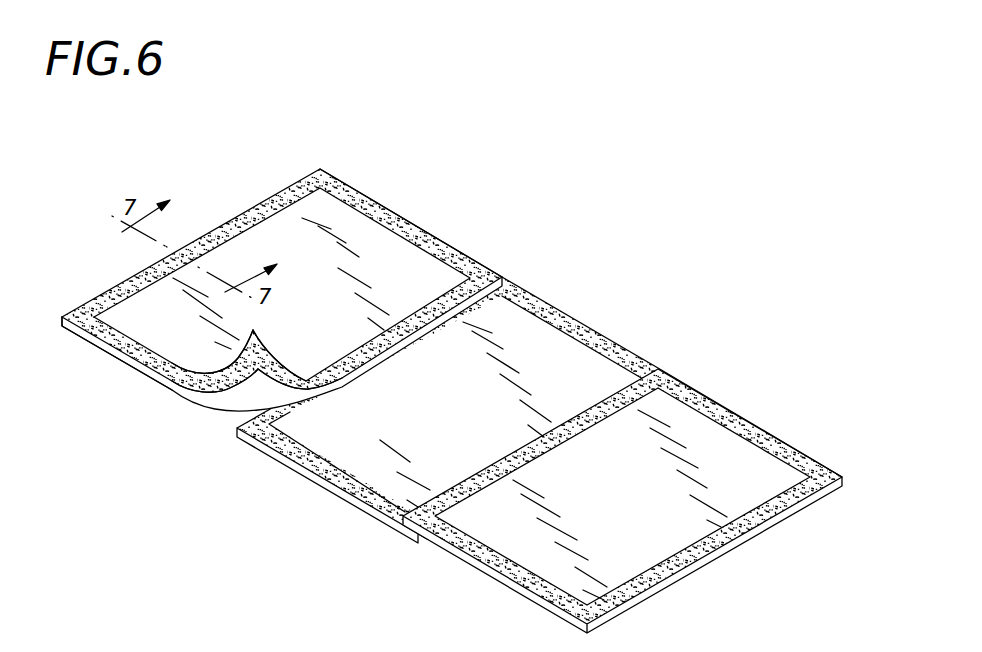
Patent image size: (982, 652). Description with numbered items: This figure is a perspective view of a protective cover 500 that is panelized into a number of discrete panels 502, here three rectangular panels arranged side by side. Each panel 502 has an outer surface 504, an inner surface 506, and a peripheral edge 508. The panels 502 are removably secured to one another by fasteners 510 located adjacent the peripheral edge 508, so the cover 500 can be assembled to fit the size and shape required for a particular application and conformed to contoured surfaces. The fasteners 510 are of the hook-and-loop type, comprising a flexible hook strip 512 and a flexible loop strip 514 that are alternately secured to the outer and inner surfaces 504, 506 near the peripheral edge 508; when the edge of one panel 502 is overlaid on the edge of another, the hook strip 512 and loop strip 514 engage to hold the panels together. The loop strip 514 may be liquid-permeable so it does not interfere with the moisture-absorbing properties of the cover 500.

The cover 500 is at (558, 240).
The panel 502 is at (332, 290).
The outer surface 504 is at (132, 317).
The inner surface 506 is at (248, 388).
The peripheral edge 508 is at (92, 339).
The fastener 510 is at (272, 190).
The hook strip 512 is at (425, 228).
The loop strip 514 is at (207, 395).